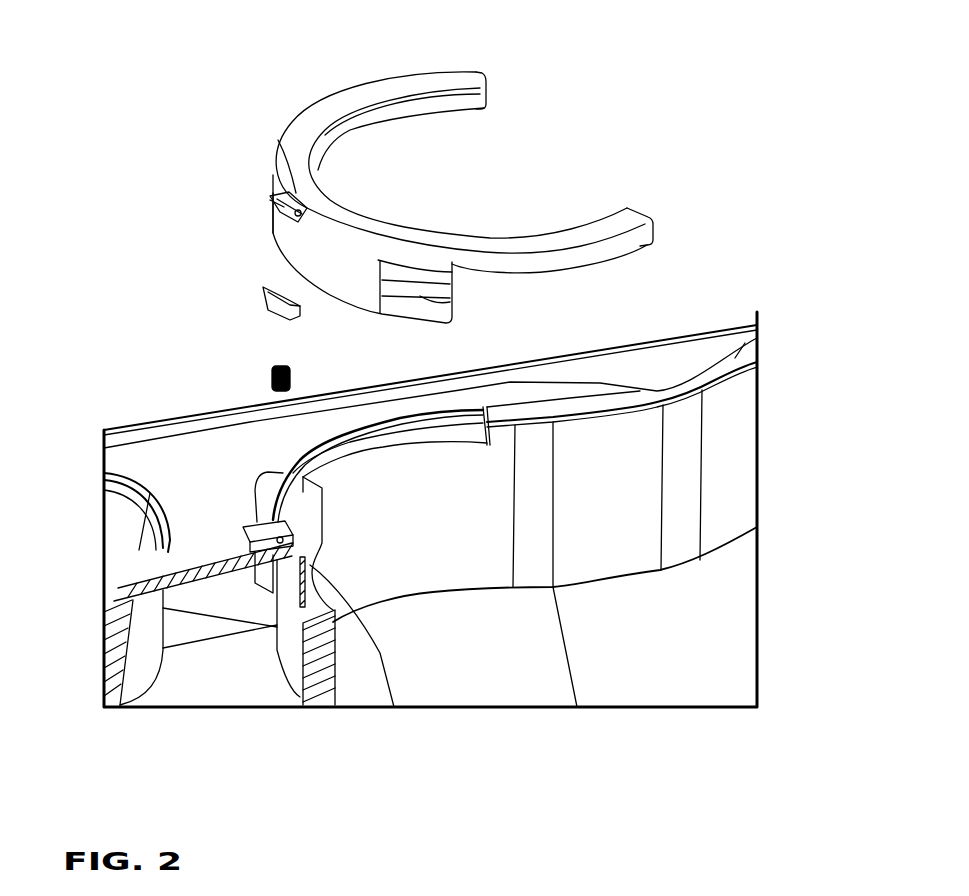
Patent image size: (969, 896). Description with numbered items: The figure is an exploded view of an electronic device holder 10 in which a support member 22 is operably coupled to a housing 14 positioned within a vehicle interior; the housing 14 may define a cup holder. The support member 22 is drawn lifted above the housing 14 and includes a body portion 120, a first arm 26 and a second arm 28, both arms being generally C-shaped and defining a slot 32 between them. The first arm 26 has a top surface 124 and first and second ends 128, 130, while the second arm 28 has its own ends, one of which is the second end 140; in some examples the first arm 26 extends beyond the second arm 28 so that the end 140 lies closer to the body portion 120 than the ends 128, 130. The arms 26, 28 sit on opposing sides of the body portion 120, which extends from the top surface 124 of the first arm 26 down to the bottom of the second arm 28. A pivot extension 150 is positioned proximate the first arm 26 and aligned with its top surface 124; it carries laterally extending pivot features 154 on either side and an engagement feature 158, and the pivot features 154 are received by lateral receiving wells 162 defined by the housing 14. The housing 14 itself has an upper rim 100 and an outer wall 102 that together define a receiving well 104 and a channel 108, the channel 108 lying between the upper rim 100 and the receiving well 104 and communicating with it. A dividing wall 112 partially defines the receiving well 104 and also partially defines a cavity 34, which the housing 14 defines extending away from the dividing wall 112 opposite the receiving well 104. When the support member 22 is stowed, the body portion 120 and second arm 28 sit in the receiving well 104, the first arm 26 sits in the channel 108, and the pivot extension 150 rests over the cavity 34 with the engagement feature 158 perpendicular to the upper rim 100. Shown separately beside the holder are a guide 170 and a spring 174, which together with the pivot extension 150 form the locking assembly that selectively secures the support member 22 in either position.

The electronic device holder 10 is at (232, 72).
The housing 14 is at (720, 505).
The support member 22 is at (285, 160).
The first arm 26 is at (384, 92).
The second arm 28 is at (424, 316).
The slot 32 is at (430, 283).
The cavity 34 is at (281, 595).
The upper rim 100 is at (740, 355).
The outer wall 102 is at (728, 414).
The receiving well 104 is at (322, 700).
The channel 108 is at (360, 464).
The dividing wall 112 is at (322, 614).
The body portion 120 is at (303, 262).
The top surface 124 is at (332, 115).
The first end 128 is at (482, 80).
The second end 130 is at (630, 213).
The second end 140 is at (430, 298).
The pivot extension 150 is at (290, 218).
The laterally extending pivot features 154 is at (272, 195).
The engagement feature 158 is at (270, 206).
The lateral receiving wells 162 is at (150, 568).
The guide 170 is at (262, 302).
The spring 174 is at (266, 381).